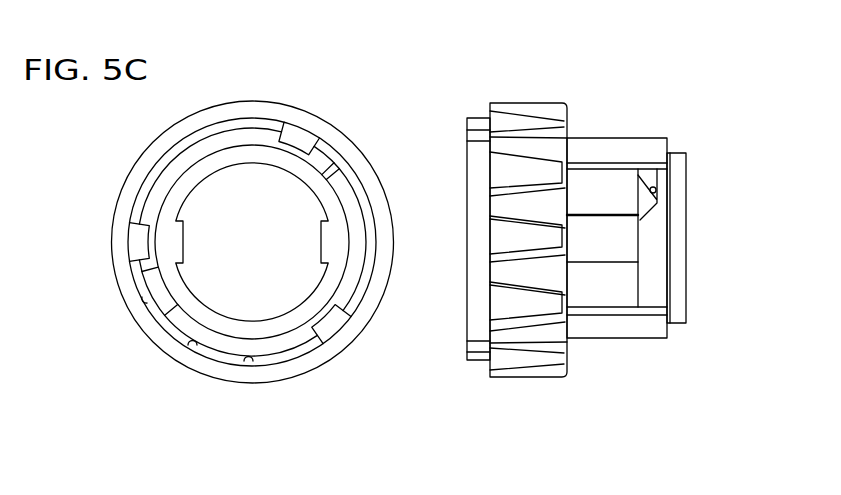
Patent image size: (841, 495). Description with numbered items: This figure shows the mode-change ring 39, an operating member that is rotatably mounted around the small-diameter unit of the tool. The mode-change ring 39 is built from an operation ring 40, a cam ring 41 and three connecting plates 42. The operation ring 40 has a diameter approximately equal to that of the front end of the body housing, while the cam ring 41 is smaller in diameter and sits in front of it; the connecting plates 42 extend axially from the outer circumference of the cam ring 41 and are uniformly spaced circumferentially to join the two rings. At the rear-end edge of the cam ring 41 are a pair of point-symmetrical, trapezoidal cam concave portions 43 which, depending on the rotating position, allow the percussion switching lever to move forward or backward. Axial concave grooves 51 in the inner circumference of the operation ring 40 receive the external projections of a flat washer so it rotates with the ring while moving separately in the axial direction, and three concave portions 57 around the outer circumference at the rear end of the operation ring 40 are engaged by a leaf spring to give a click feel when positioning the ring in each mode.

The mode-change ring 39 is at (330, 124).
The operation ring 40 is at (383, 164).
The cam ring 41 is at (323, 290).
The connecting plates 42 is at (633, 150).
The cam concave portions 43 is at (327, 197).
The concave grooves 51 is at (303, 134).
The concave portions 57 is at (143, 300).